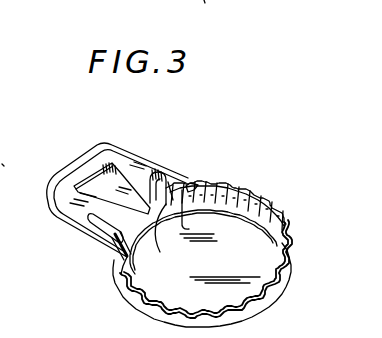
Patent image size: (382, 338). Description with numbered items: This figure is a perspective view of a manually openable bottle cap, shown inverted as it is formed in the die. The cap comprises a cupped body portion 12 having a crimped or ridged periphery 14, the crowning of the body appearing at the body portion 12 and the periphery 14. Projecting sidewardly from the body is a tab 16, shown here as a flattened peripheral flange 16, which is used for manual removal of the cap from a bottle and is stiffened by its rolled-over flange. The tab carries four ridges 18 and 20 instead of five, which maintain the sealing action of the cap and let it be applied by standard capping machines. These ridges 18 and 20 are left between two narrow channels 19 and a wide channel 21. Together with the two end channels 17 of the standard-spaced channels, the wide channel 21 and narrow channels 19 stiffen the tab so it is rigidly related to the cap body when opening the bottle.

The cupped body portion 12 is at (249, 252).
The crimped periphery 14 is at (265, 207).
The tab 16 is at (88, 154).
The end channels 17 is at (190, 191).
The ridges 18 is at (120, 252).
The narrow channels 19 is at (166, 180).
The ridges 20 is at (123, 230).
The wide channel 21 is at (106, 185).